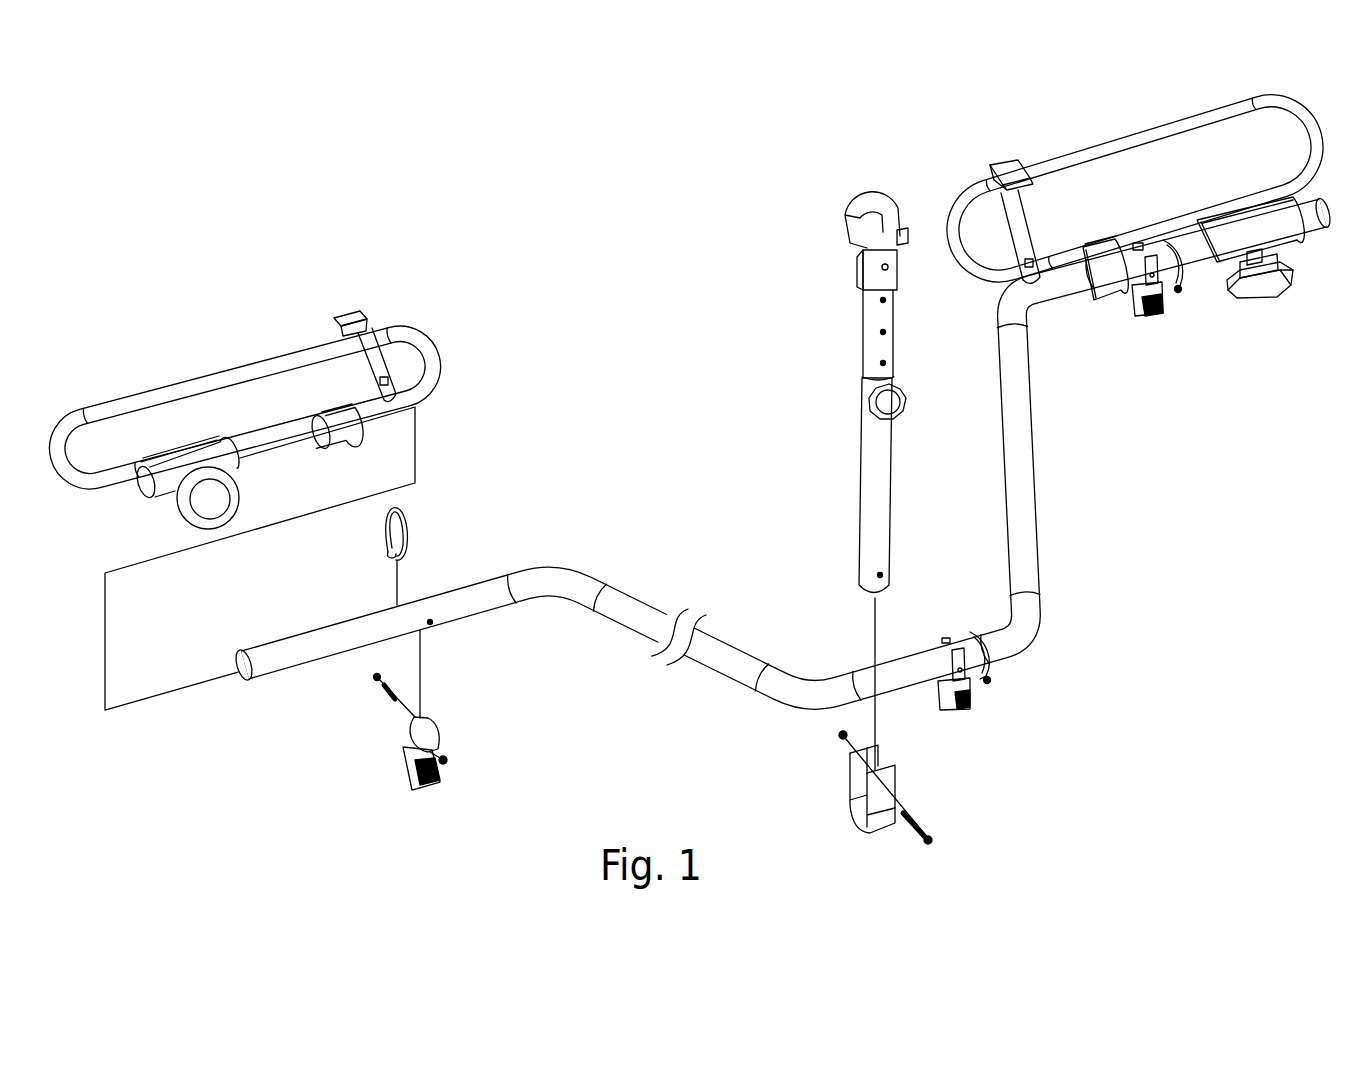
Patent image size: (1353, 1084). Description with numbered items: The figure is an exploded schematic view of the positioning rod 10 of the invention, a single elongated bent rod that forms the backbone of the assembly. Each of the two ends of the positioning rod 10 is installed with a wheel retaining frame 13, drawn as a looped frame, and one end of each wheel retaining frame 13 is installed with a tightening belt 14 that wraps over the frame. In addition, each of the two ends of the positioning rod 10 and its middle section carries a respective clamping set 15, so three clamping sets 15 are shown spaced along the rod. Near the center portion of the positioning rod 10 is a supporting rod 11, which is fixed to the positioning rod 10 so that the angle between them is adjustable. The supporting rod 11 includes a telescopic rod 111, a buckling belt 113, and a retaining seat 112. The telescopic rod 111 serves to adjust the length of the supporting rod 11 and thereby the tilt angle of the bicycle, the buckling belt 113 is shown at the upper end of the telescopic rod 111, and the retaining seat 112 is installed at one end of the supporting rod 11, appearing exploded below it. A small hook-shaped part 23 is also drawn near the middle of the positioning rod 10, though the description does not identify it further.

The positioning rod 10 is at (1020, 563).
The supporting rod 11 is at (868, 455).
The telescopic rod 111 is at (868, 334).
The retaining seat 112 is at (858, 783).
The buckling belt 113 is at (878, 200).
The wheel retaining frame 13 is at (433, 372).
The tightening belt 14 is at (374, 347).
The clamping set 15 is at (405, 769).
The hook 23 is at (407, 530).